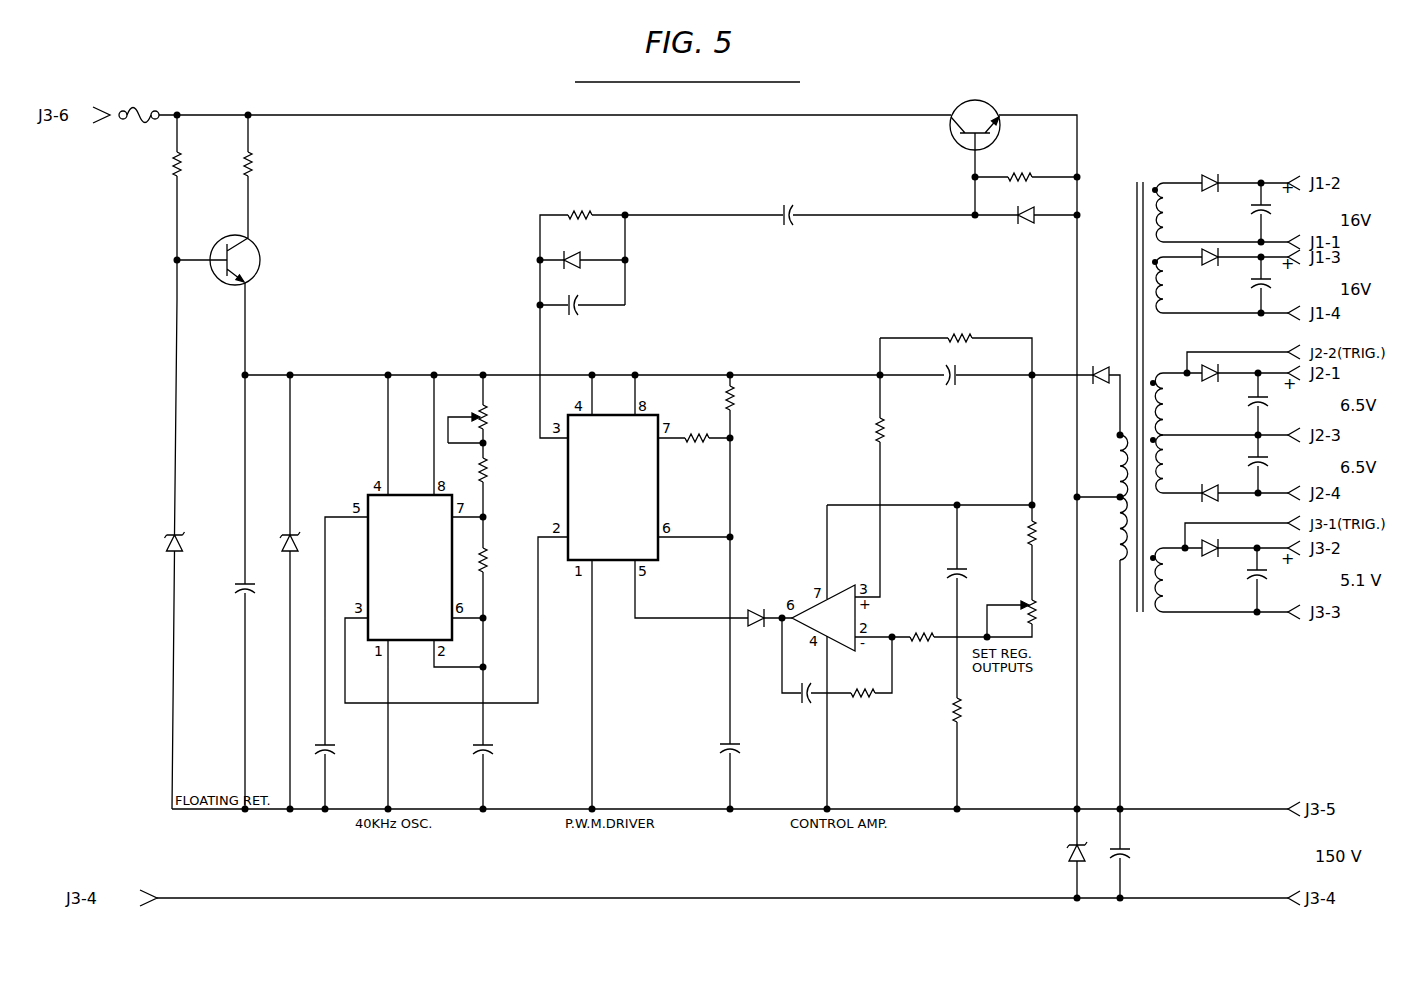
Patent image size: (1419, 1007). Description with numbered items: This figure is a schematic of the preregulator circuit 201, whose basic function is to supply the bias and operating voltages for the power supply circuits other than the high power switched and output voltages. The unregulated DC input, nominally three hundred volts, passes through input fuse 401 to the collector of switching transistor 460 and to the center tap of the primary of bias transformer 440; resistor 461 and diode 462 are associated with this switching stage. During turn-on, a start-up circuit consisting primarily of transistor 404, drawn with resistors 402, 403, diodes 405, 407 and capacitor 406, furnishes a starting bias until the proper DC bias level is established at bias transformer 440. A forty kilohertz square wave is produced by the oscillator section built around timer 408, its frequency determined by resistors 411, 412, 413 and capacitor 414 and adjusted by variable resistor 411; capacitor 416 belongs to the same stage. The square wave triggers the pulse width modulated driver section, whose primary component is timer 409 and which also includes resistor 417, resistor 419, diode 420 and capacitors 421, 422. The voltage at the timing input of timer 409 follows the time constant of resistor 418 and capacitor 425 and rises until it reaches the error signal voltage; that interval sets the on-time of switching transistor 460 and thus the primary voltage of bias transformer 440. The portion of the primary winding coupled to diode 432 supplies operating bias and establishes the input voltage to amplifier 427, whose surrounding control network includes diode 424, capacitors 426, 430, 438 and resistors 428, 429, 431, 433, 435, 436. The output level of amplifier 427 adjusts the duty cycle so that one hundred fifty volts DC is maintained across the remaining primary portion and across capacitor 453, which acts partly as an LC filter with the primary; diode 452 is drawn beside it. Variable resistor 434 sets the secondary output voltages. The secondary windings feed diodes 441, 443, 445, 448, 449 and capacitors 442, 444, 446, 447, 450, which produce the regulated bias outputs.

The preregulator circuit 201 is at (687, 71).
The input fuse 401 is at (142, 111).
The resistor 402 is at (172, 164).
The resistor 403 is at (252, 164).
The transistor 404 is at (259, 250).
The diode 405 is at (166, 544).
The capacitor 406 is at (235, 591).
The diode 407 is at (298, 547).
The timer 408 is at (406, 642).
The timer 409 is at (658, 478).
The variable resistor 411 is at (488, 414).
The resistor 412 is at (487, 467).
The resistor 413 is at (488, 548).
The capacitor 414 is at (473, 750).
The capacitor 416 is at (334, 753).
The resistor 417 is at (694, 441).
The resistor 418 is at (734, 399).
The resistor 419 is at (581, 209).
The diode 420 is at (576, 244).
The capacitor 421 is at (571, 297).
The capacitor 422 is at (788, 224).
The diode 424 is at (754, 608).
The capacitor 425 is at (718, 744).
The capacitor 426 is at (805, 700).
The amplifier 427 is at (838, 586).
The resistor 428 is at (862, 698).
The resistor 429 is at (884, 428).
The capacitor 430 is at (957, 362).
The resistor 431 is at (963, 332).
The diode 432 is at (1100, 365).
The resistor 433 is at (1028, 533).
The variable resistor 434 is at (1028, 597).
The resistor 435 is at (962, 713).
The resistor 436 is at (920, 640).
The capacitor 438 is at (948, 574).
The bias transformer 440 is at (1140, 182).
The diode 441 is at (1214, 175).
The capacitor 442 is at (1272, 209).
The diode 443 is at (1217, 265).
The capacitor 444 is at (1252, 284).
The diode 445 is at (1214, 380).
The capacitor 446 is at (1248, 402).
The capacitor 447 is at (1247, 461).
The diode 448 is at (1212, 481).
The diode 449 is at (1214, 554).
The capacitor 450 is at (1248, 578).
The diode 452 is at (1068, 852).
The capacitor 453 is at (1132, 854).
The switching transistor 460 is at (977, 100).
The resistor 461 is at (1022, 173).
The diode 462 is at (1022, 224).